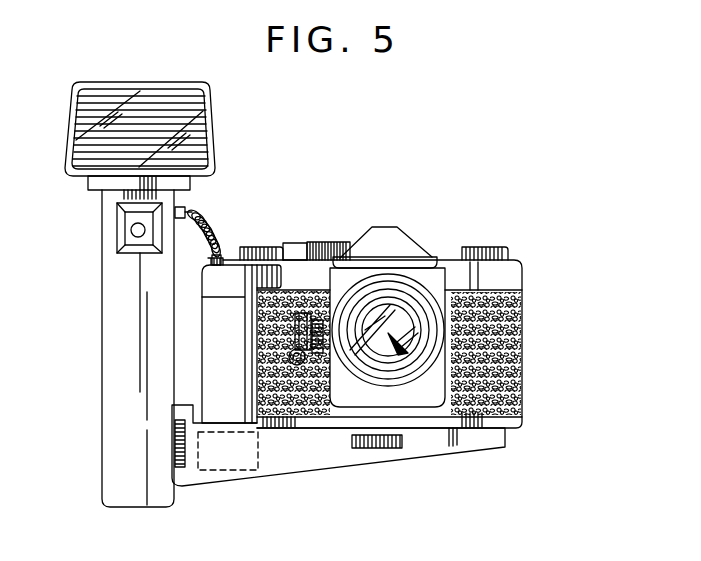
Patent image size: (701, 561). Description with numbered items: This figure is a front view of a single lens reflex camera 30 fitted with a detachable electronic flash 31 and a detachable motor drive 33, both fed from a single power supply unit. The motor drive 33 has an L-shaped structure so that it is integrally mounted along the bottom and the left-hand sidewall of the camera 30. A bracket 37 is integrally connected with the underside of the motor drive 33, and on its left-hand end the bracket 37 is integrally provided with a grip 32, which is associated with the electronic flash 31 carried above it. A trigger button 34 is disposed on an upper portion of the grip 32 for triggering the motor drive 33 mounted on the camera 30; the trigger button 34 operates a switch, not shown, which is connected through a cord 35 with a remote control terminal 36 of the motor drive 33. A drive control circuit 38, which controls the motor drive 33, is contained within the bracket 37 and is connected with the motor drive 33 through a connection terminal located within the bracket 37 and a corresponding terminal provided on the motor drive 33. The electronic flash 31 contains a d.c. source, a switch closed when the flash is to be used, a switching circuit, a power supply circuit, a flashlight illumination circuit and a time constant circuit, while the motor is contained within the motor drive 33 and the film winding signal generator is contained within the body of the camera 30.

The camera 30 is at (512, 280).
The electronic flash 31 is at (137, 97).
The grip 32 is at (102, 383).
The motor drive 33 is at (518, 428).
The trigger button 34 is at (130, 231).
The cord 35 is at (215, 229).
The remote control terminal 36 is at (223, 263).
The bracket 37 is at (345, 458).
The drive control circuit 38 is at (228, 468).